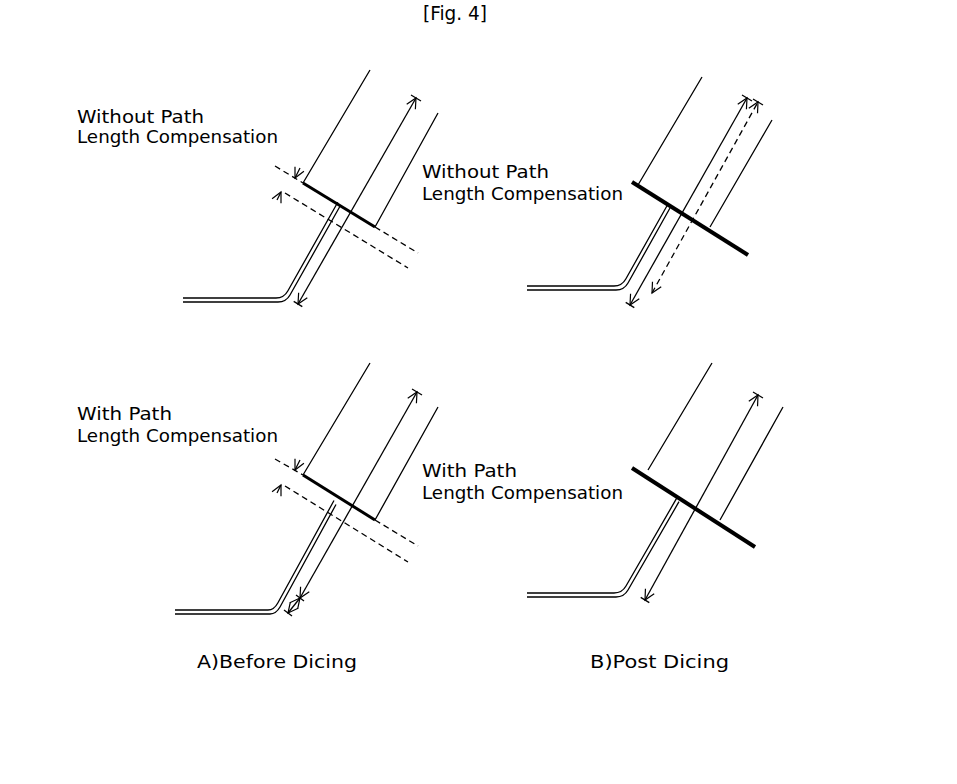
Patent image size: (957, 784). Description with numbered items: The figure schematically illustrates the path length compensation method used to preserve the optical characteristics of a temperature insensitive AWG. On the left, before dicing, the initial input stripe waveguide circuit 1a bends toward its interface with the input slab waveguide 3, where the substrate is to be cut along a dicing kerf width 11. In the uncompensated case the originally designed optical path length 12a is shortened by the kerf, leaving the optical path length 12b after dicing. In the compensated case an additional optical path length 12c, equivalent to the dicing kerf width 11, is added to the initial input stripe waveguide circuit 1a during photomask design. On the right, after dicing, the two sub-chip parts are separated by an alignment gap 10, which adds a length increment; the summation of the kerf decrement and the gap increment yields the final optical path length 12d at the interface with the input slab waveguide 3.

The input slab waveguide 3 is at (355, 125).
The dicing kerf width 11 is at (283, 185).
The alignment gap 10 is at (723, 250).
The initial input stripe waveguide circuit 1a is at (270, 298).
The originally designed optical path length 12a is at (332, 268).
The optical path length after dicing 12b is at (682, 252).
The additional optical path length 12c is at (307, 609).
The final optical path length 12d is at (672, 567).